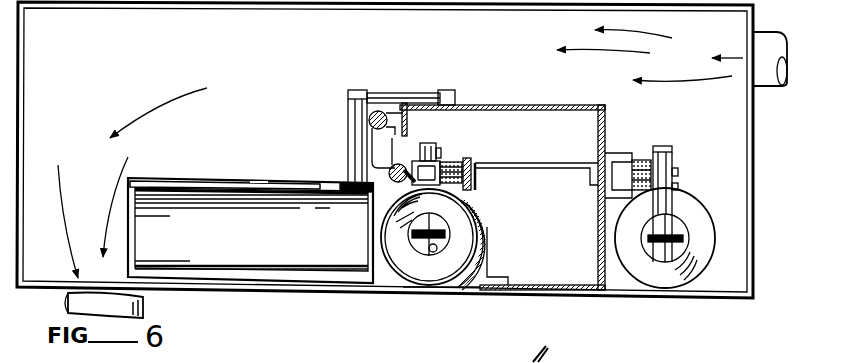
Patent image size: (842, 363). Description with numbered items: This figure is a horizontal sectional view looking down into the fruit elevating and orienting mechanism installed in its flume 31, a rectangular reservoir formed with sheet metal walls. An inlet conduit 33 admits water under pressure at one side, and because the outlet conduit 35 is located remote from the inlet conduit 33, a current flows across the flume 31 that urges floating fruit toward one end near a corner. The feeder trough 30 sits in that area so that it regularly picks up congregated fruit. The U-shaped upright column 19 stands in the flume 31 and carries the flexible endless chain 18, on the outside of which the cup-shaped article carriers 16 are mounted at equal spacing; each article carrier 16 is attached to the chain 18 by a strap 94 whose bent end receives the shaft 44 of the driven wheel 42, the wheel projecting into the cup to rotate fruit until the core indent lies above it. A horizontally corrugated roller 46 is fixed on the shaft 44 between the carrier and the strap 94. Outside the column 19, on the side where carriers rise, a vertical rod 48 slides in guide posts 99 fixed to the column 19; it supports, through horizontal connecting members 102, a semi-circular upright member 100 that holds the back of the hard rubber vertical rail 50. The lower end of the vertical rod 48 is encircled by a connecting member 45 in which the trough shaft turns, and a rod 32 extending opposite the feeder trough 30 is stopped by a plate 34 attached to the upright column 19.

The cup-shaped article carrier 16 is at (457, 217).
The flexible endless chain 18 is at (454, 163).
The upright column 19 is at (608, 128).
The feeder trough 30 is at (268, 247).
The flume 31 is at (750, 232).
The rod 32 is at (417, 97).
The inlet conduit 33 is at (762, 70).
The plate 34 is at (447, 92).
The outlet conduit 35 is at (90, 303).
The driven wheel 42 is at (420, 242).
The shaft 44 is at (435, 250).
The connecting member 45 is at (360, 172).
The horizontally corrugated roller 46 is at (677, 160).
The vertical rod 48 is at (348, 110).
The vertical rail 50 is at (410, 162).
The strap 94 is at (662, 147).
The guide post 99 is at (398, 115).
The semi-circular upright member 100 is at (396, 164).
The horizontal connecting member 102 is at (362, 157).